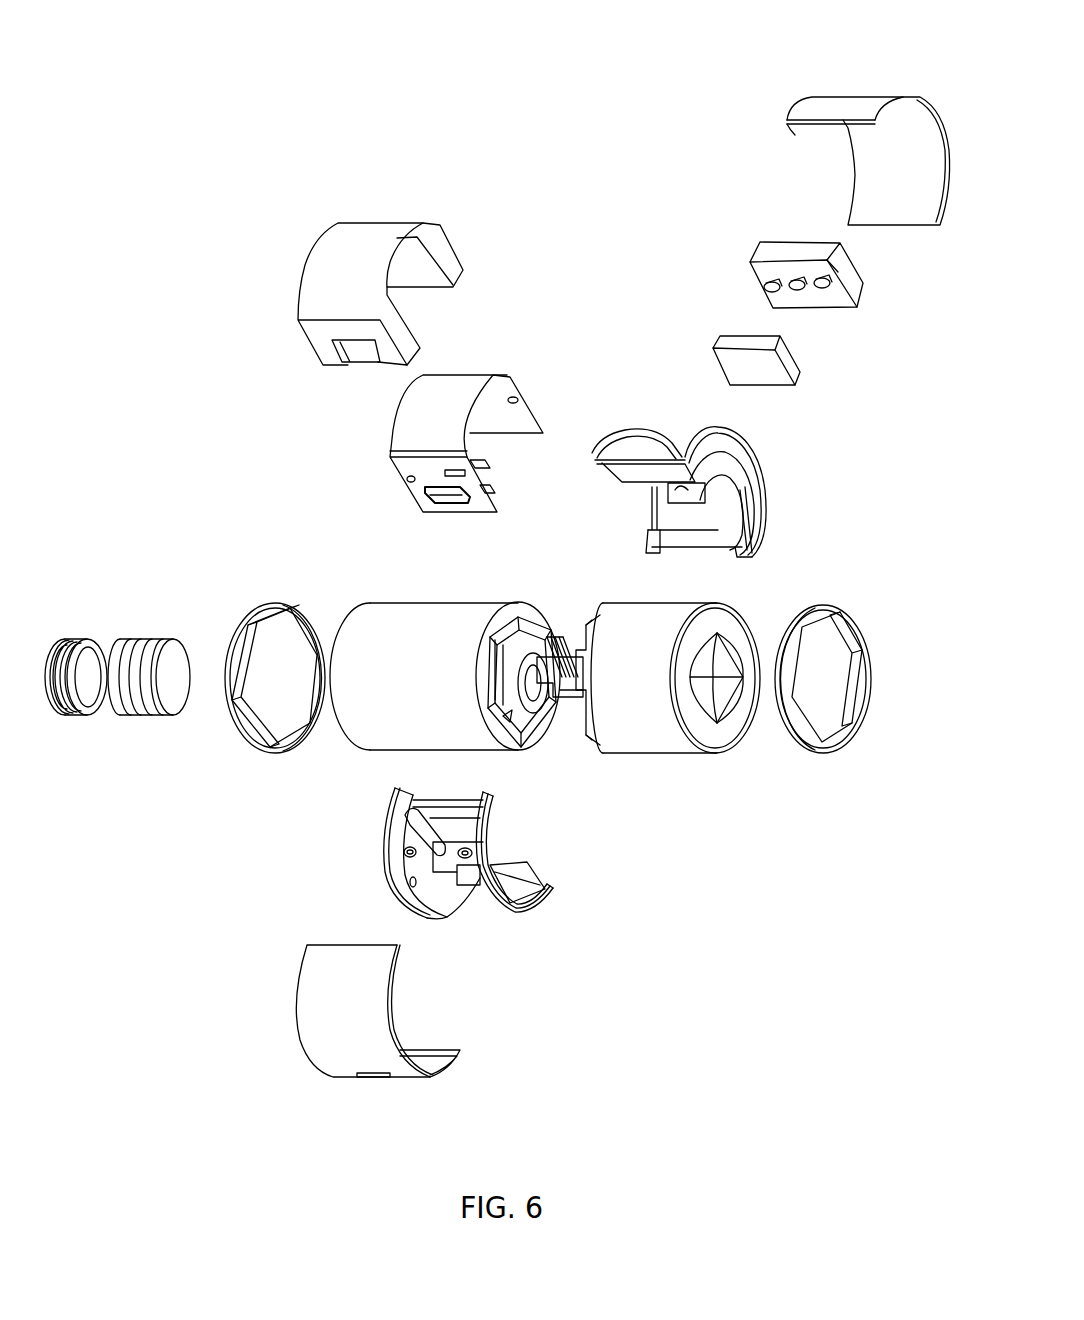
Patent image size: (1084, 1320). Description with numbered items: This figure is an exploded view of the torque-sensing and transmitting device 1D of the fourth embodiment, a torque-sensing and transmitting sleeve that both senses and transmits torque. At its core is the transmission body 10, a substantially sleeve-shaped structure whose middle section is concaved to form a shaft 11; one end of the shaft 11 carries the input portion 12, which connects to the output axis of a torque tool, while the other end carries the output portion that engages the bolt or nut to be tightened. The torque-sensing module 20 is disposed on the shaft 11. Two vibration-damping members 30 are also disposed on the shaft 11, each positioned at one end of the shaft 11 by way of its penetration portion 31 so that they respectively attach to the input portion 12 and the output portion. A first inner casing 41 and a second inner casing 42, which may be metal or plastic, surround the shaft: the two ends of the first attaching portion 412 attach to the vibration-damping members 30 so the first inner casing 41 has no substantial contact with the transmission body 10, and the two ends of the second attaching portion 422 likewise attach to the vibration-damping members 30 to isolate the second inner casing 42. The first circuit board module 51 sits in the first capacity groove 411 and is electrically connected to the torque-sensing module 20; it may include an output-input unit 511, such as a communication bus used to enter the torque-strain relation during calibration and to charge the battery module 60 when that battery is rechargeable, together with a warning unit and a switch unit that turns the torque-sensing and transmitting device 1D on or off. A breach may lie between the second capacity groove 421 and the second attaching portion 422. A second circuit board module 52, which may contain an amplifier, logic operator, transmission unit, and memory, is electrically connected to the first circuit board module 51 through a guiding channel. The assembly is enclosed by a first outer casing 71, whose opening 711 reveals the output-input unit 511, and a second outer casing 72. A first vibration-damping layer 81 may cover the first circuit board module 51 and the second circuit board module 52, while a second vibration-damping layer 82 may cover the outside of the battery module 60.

The torque-sensing and transmitting device 1D is at (760, 982).
The transmission body 10 is at (683, 724).
The shaft 11 is at (477, 710).
The input portion 12 is at (718, 738).
The torque-sensing module 20 is at (580, 680).
The vibration-damping members 30 is at (238, 740).
The penetration portion 31 is at (263, 690).
The first inner casing 41 is at (470, 899).
The first capacity groove 411 is at (427, 870).
The first attaching portion 412 is at (543, 877).
The second inner casing 42 is at (715, 458).
The second capacity groove 421 is at (665, 452).
The second attaching portion 422 is at (750, 530).
The first circuit board module 51 is at (435, 476).
The output-input unit 511 is at (450, 507).
The second circuit board module 52 is at (147, 635).
The battery module 60 is at (790, 362).
The first outer casing 71 is at (335, 1056).
The opening 711 is at (370, 1080).
The second outer casing 72 is at (848, 108).
The first vibration-damping layer 81 is at (318, 337).
The second vibration-damping layer 82 is at (858, 285).